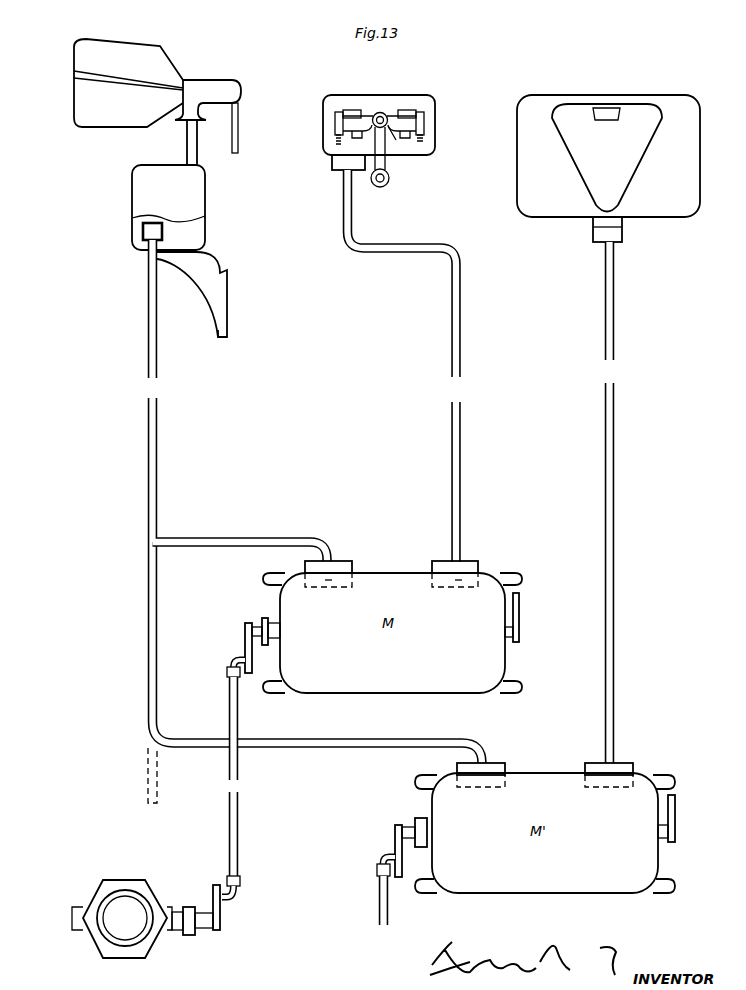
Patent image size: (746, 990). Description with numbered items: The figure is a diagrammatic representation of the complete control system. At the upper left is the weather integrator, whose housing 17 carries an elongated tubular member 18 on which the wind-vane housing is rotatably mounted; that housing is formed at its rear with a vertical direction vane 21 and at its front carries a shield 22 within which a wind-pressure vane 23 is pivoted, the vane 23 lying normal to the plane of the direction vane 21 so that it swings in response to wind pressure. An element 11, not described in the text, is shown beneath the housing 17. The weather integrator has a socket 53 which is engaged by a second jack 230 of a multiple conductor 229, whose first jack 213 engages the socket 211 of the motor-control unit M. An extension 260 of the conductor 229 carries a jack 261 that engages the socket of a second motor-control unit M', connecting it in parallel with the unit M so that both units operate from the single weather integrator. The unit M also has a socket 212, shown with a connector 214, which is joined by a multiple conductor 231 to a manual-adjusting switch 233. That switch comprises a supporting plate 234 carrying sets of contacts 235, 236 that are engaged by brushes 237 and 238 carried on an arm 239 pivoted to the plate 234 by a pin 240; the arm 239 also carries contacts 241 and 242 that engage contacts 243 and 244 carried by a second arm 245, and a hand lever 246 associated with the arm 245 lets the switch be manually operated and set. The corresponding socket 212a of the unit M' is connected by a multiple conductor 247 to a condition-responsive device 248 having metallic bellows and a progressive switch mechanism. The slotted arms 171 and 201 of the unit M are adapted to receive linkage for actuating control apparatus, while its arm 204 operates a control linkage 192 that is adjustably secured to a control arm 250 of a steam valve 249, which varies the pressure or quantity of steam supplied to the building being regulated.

The bracket 11 is at (198, 290).
The housing 17 is at (205, 205).
The elongated tubular member 18 is at (197, 145).
The vertical direction vane 21 is at (121, 118).
The shield 22 is at (241, 90).
The wind-pressure vane 23 is at (238, 133).
The socket 53 is at (143, 232).
The slotted arm 171 is at (265, 618).
The control linkage mechanism 192 is at (238, 777).
The slotted arm 201 is at (519, 612).
The arm 204 is at (245, 642).
The multiple socket 211 is at (331, 586).
The multiple socket 212 is at (462, 586).
The socket 212a is at (611, 787).
The jack 213 is at (340, 567).
The terminal pad 214 is at (478, 567).
The multiple conductor 229 is at (148, 450).
The second jack 230 is at (150, 246).
The multiple conductor 231 is at (460, 402).
The manual-adjusting switch 233 is at (441, 141).
The supporting plate 234 is at (422, 112).
The set of contacts 235 is at (336, 136).
The set of contacts 236 is at (425, 135).
The brush 237 is at (346, 136).
The brush 238 is at (410, 134).
The arm 239 is at (391, 150).
The pin 240 is at (382, 112).
The contact 241 is at (344, 111).
The contact 242 is at (417, 113).
The contact 243 is at (335, 119).
The contact 244 is at (425, 121).
The second arm 245 is at (374, 150).
The hand lever 246 is at (388, 184).
The multiple conductor 247 is at (615, 537).
The condition-responsive device 248 is at (663, 208).
The steam valve 249 is at (147, 896).
The control arm 250 is at (220, 918).
The extension 260 is at (148, 632).
The jack 261 is at (500, 763).